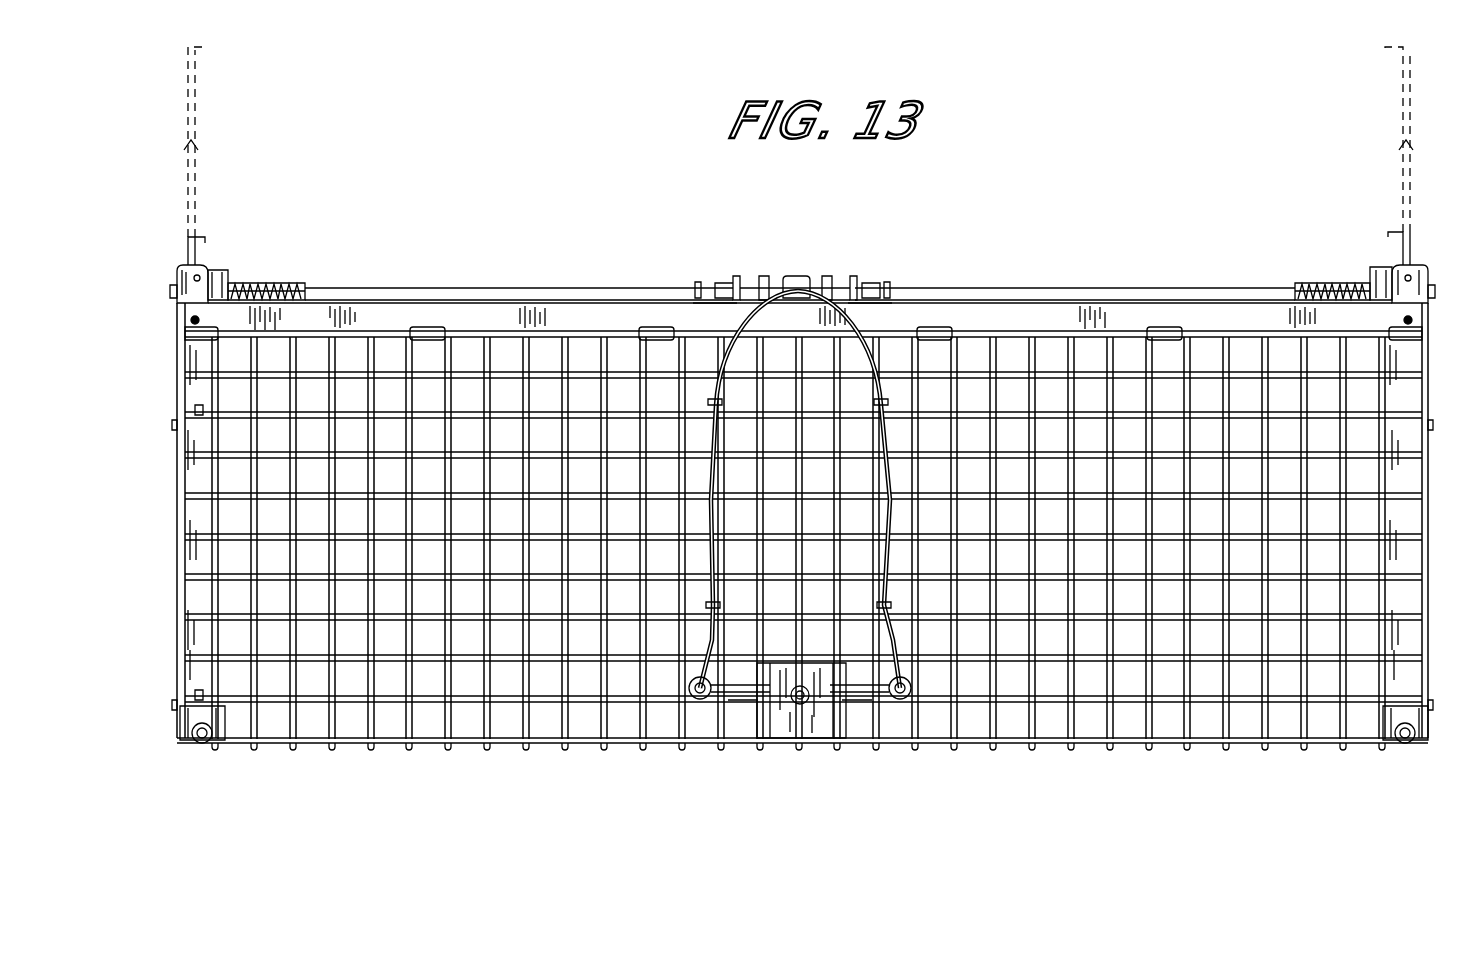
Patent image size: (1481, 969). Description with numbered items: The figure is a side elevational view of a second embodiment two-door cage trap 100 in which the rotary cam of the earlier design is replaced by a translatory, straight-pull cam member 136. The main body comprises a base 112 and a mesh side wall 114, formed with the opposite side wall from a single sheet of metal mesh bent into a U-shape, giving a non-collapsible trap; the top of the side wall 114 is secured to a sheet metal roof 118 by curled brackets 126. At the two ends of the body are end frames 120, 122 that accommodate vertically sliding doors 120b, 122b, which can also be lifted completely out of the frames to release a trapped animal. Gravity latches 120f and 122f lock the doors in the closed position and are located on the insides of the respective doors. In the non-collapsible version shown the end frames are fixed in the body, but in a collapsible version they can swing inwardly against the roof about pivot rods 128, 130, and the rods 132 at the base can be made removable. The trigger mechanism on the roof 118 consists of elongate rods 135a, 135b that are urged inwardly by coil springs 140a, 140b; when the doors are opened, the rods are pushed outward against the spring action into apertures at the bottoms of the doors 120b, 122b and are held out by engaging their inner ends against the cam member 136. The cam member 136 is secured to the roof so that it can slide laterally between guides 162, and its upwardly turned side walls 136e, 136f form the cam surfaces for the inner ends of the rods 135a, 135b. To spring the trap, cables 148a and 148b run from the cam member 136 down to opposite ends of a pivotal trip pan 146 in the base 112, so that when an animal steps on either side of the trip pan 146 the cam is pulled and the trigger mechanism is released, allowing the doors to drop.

The two-door trap 100 is at (597, 248).
The base 112 is at (548, 746).
The side wall 114 is at (1312, 550).
The roof 118 is at (1106, 302).
The end frame 120 is at (196, 476).
The door 120b is at (195, 128).
The gravity latch 120f is at (222, 270).
The end frame 122 is at (1398, 478).
The door 122b is at (1394, 231).
The gravity latch 122f is at (1378, 267).
The curled brackets 126 is at (428, 326).
The pivot rod 128 is at (192, 326).
The pivot rod 130 is at (1412, 284).
The rods 132 is at (206, 743).
The elongate rod 135a is at (510, 287).
The elongate rod 135b is at (995, 287).
The cam member 136 is at (793, 276).
The side wall of cam member 136e is at (764, 276).
The side wall of cam member 136f is at (829, 276).
The coil spring 140a is at (298, 283).
The coil spring 140b is at (1318, 283).
The trip pan 146 is at (850, 702).
The cable 148a is at (709, 470).
The cable 148b is at (893, 468).
The guides 162 is at (737, 276).